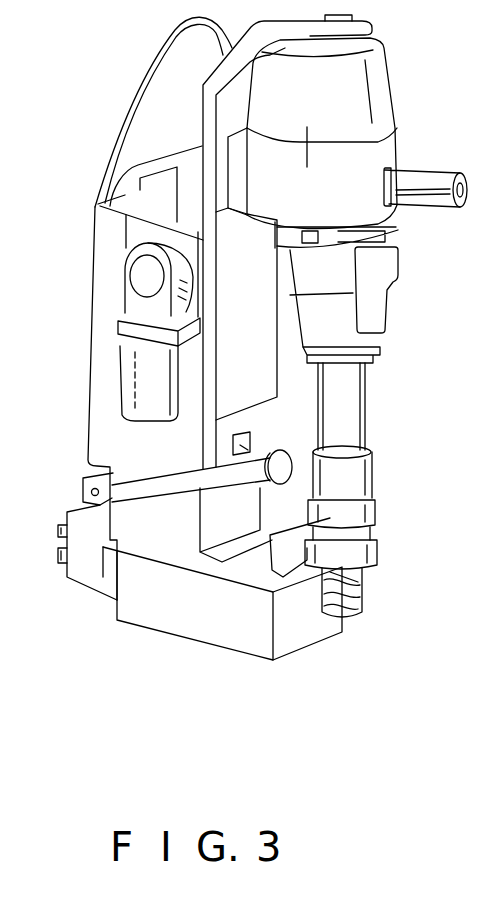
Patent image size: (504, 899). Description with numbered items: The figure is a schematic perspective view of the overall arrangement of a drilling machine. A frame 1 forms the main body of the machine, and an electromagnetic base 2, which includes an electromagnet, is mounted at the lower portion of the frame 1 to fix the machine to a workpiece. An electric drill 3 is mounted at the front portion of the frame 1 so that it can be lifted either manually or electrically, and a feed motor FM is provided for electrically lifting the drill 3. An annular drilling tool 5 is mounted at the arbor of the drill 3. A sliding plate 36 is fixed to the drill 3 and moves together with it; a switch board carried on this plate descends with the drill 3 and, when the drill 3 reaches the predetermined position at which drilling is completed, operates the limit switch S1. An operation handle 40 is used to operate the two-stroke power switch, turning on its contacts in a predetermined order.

The frame 1 is at (100, 265).
The electromagnetic base 2 is at (175, 617).
The electric drill 3 is at (387, 107).
The annular drilling tool 5 is at (358, 603).
The sliding plate 36 is at (267, 385).
The operation handle 40 is at (165, 484).
The feed motor FM is at (130, 403).
The limit switch S1 is at (250, 443).